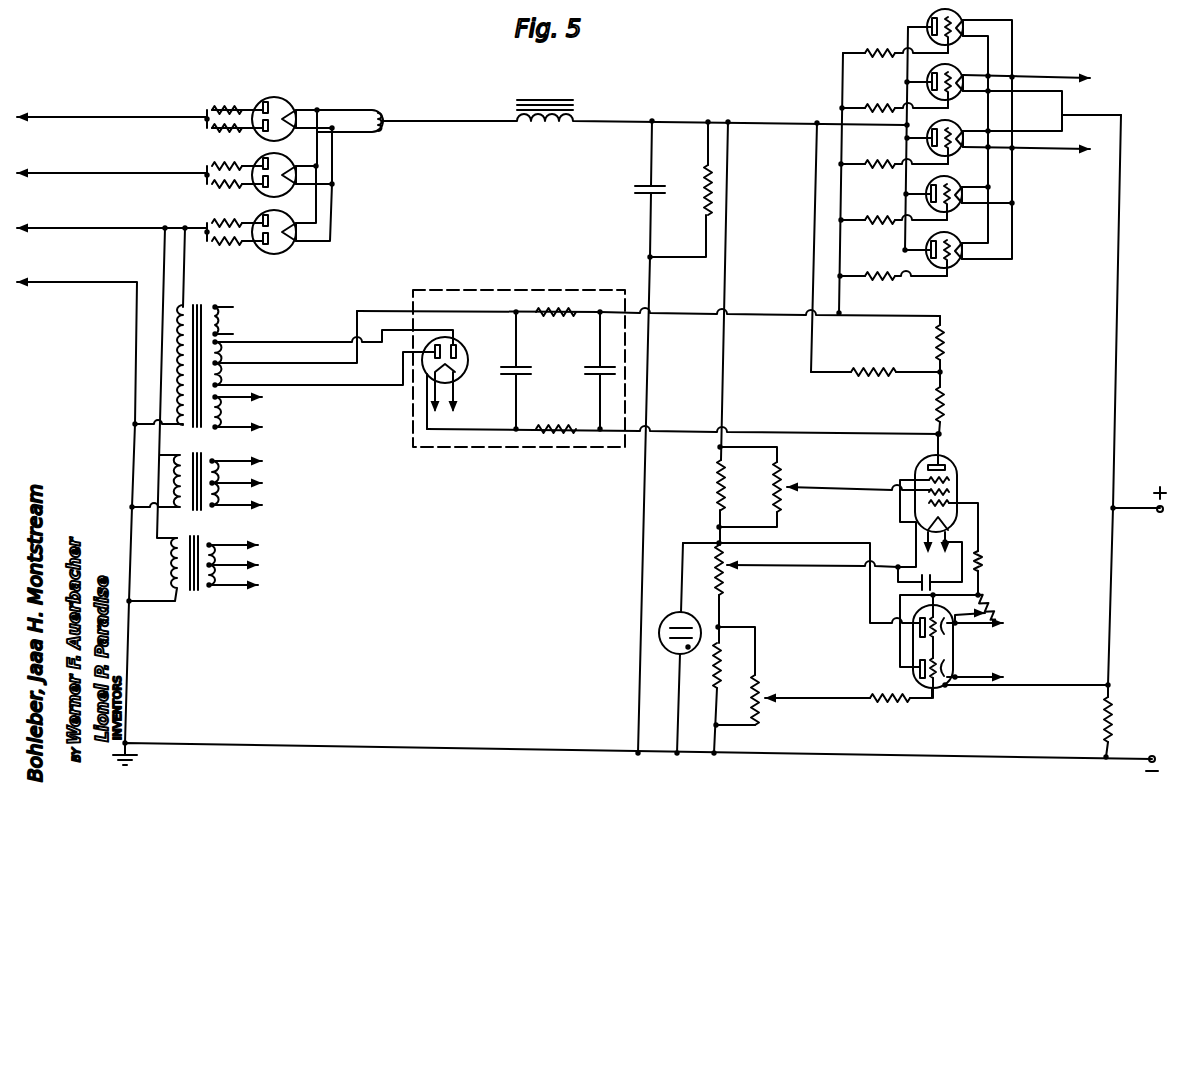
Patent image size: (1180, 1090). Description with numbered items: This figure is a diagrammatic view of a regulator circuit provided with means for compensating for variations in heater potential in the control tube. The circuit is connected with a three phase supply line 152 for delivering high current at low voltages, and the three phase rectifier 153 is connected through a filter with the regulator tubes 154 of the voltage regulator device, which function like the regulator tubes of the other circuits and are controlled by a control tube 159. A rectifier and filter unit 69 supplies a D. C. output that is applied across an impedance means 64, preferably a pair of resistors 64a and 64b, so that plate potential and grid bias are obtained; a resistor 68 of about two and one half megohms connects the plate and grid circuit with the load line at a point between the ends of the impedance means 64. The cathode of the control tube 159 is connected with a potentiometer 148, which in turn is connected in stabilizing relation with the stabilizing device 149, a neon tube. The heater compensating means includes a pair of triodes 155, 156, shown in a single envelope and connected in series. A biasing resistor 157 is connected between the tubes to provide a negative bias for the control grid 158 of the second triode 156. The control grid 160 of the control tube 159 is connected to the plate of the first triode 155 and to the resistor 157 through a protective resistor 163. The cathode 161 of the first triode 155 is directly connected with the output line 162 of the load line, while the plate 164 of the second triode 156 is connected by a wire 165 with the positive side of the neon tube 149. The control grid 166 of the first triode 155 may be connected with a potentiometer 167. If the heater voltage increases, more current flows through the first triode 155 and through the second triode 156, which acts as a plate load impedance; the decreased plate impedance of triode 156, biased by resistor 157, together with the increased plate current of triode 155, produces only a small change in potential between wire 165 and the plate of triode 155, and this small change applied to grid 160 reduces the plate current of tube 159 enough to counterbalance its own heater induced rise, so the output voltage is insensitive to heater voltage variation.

The three phase supply line 152 is at (113, 225).
The three phase rectifier 153 is at (287, 97).
The regulator tubes 154 is at (962, 17).
The oscillator unit 69 is at (500, 283).
The resistor 68 is at (858, 368).
The impedance means 64 is at (943, 376).
The resistor 64a is at (935, 408).
The resistor 64b is at (932, 350).
The potentiometer 148 is at (730, 582).
The stabilizing device 149 is at (665, 657).
The control tube 159 is at (956, 510).
The control grid 160 is at (946, 503).
The output line 162 is at (1111, 458).
The protective resistor 163 is at (985, 565).
The wire 165 is at (828, 544).
The second triode 156 is at (940, 609).
The biasing resistor 157 is at (997, 605).
The plate 164 is at (917, 633).
The control grid 158 is at (940, 634).
The first triode 155 is at (912, 675).
The control grid 166 is at (948, 657).
The cathode 161 is at (936, 692).
The potentiometer 167 is at (766, 708).